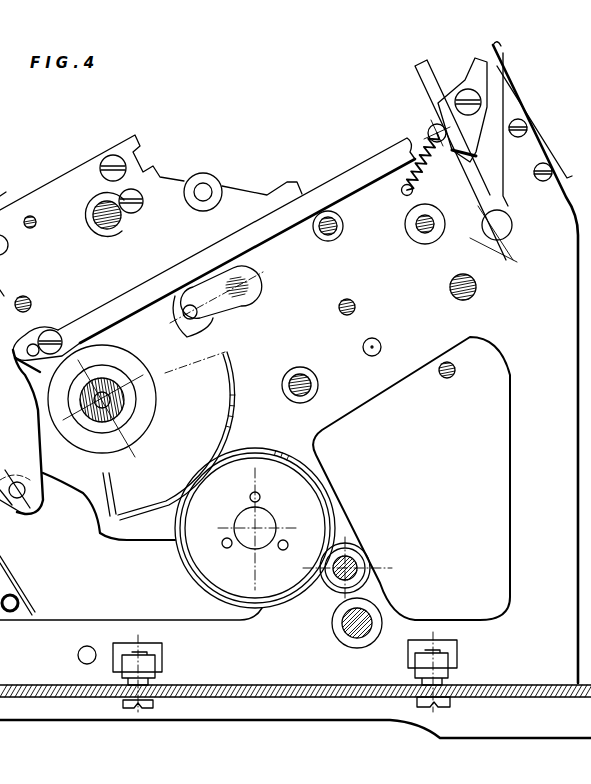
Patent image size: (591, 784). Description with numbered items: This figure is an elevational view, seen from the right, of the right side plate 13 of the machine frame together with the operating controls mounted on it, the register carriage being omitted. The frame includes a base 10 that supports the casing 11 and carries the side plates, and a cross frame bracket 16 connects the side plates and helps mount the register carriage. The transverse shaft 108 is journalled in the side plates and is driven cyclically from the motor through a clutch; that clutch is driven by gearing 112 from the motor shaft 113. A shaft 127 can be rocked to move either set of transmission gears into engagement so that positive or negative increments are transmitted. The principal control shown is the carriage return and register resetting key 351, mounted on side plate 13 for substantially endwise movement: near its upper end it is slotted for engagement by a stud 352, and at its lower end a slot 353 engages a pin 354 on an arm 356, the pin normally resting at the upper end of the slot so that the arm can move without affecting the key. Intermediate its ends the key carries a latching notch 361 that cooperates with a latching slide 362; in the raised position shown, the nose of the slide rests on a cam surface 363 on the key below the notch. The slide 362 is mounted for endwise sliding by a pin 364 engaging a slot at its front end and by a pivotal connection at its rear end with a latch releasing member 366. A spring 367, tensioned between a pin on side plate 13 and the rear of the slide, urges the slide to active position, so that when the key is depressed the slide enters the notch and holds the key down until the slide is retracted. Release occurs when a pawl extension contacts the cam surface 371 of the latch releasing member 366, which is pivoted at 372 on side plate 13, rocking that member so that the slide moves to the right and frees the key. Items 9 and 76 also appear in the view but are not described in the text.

The guide rod 9 is at (17, 601).
The base 10 is at (62, 707).
The casing 11 is at (588, 540).
The right side plate 13 is at (510, 423).
The cross frame bracket 16 is at (427, 82).
The shaft 76 is at (11, 300).
The transverse shaft 108 is at (123, 402).
The gearing 112 is at (178, 553).
The motor shaft 113 is at (337, 575).
The shaft 127 is at (463, 298).
The carriage return and register resetting key 351 is at (6, 183).
The stud 352 is at (9, 250).
The slot 353 is at (42, 508).
The pin 354 is at (40, 472).
The arm 356 is at (8, 503).
The latching notch 361 is at (30, 345).
The latching slide 362 is at (200, 257).
The cam surface 363 is at (33, 373).
The pin 364 is at (50, 330).
The latch releasing member 366 is at (495, 149).
The spring 367 is at (415, 147).
The cam surface 371 is at (472, 70).
The pivot 372 is at (512, 231).